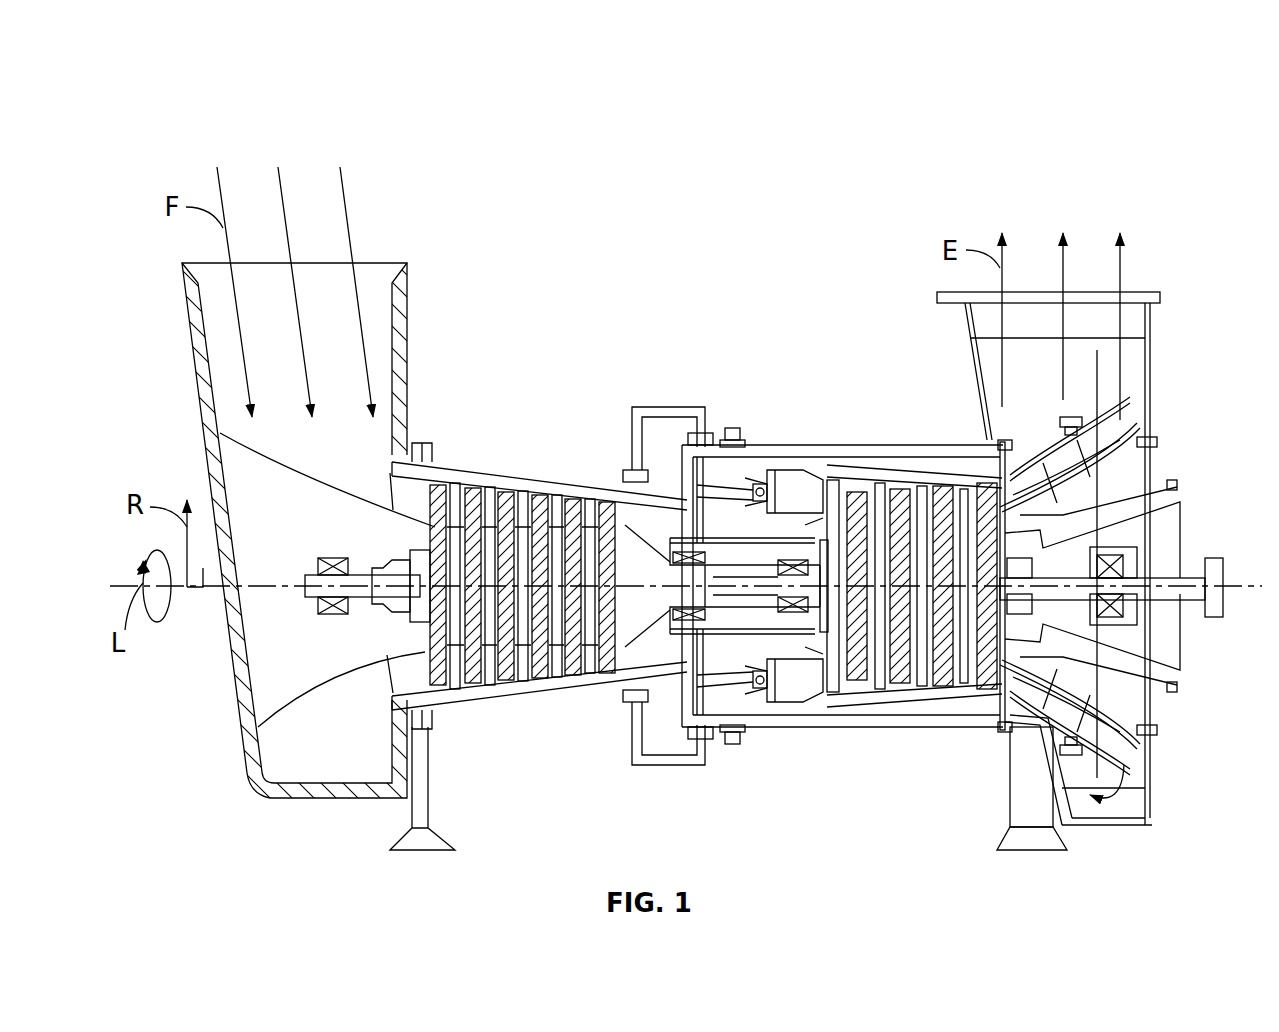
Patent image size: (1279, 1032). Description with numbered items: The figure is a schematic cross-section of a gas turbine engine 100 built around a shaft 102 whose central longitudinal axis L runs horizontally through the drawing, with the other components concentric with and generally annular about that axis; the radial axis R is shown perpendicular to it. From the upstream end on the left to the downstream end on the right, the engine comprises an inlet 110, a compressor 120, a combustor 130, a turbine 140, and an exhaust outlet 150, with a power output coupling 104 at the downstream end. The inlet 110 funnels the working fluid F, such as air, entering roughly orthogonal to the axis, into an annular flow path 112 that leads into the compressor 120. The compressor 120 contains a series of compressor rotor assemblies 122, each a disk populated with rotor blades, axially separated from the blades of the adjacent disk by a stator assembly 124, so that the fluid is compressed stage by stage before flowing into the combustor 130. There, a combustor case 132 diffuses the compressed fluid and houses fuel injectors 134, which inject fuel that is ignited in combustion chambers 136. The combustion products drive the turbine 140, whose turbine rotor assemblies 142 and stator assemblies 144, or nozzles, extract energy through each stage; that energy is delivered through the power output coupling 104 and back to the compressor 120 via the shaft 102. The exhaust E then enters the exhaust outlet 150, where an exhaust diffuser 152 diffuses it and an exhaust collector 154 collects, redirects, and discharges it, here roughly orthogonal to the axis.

The gas turbine engine 100 is at (160, 70).
The shaft 102 is at (310, 577).
The power output coupling 104 is at (1214, 558).
The inlet 110 is at (407, 130).
The annular flow path 112 is at (392, 486).
The compressor 120 is at (430, 130).
The compressor rotor assembly 122 is at (507, 690).
The stator assembly 124 is at (523, 503).
The combustor 130 is at (675, 130).
The combustor case 132 is at (760, 465).
The fuel injector 134 is at (755, 477).
The combustion chamber 136 is at (786, 478).
The turbine 140 is at (1000, 130).
The turbine rotor assembly 142 is at (987, 683).
The stator assembly 144 is at (964, 489).
The exhaust outlet 150 is at (1195, 167).
The exhaust diffuser 152 is at (1052, 447).
The exhaust collector 154 is at (965, 352).